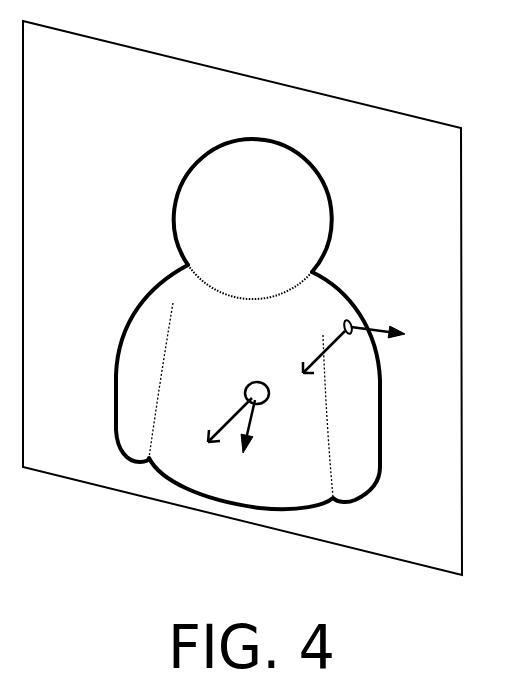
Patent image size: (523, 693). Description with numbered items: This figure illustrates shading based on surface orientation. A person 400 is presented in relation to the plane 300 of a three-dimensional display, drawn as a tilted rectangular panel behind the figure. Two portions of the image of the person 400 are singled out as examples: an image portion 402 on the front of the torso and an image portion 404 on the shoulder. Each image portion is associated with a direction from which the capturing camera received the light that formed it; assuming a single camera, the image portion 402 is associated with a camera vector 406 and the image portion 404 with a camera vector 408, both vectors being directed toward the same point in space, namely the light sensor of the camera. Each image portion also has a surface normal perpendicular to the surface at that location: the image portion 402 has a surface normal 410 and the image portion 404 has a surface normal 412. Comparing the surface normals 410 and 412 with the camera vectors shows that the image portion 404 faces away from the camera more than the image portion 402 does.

The plane of the 3D display 300 is at (433, 536).
The person 400 is at (172, 222).
The image portion 402 is at (262, 381).
The image portion 404 is at (345, 325).
The camera vector 406 is at (250, 403).
The camera vector 408 is at (337, 340).
The surface normal 410 is at (253, 417).
The surface normal 412 is at (377, 330).